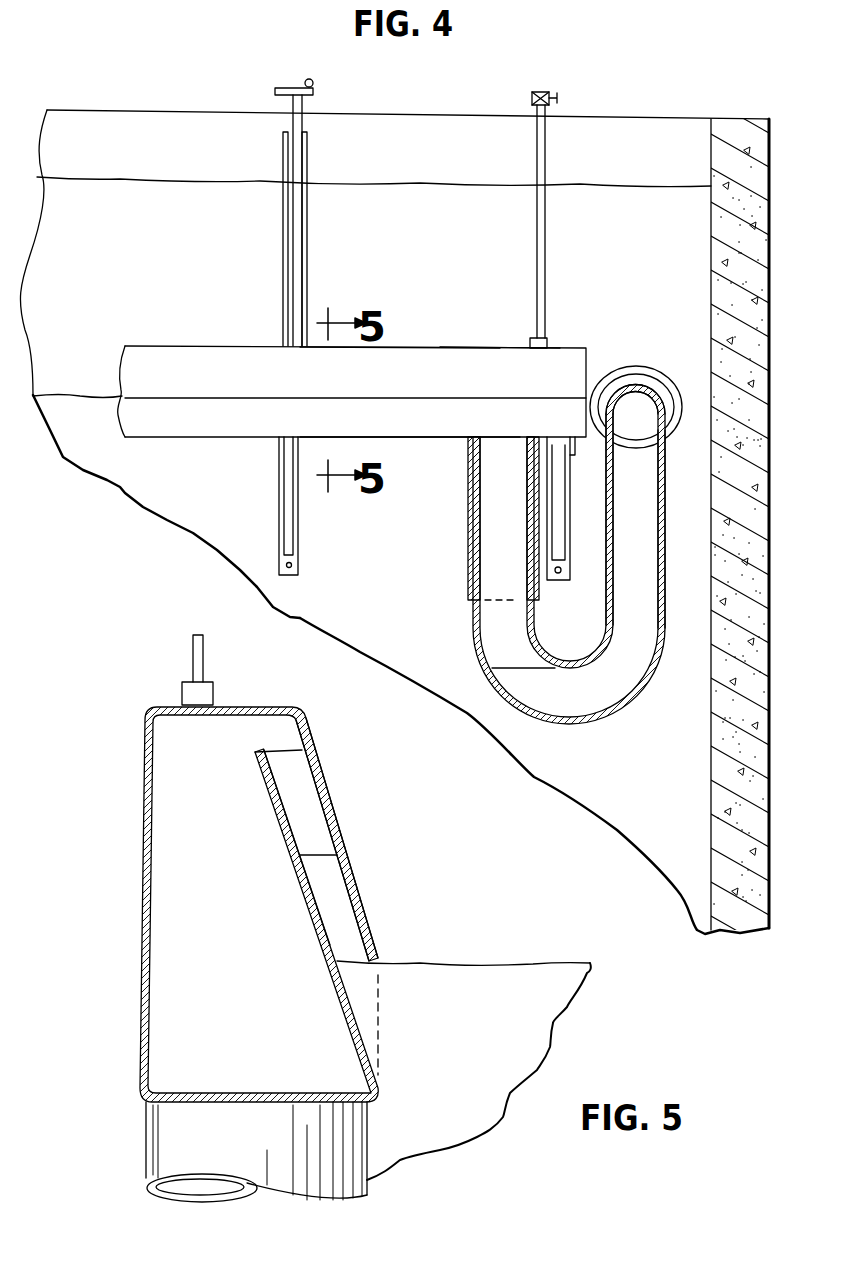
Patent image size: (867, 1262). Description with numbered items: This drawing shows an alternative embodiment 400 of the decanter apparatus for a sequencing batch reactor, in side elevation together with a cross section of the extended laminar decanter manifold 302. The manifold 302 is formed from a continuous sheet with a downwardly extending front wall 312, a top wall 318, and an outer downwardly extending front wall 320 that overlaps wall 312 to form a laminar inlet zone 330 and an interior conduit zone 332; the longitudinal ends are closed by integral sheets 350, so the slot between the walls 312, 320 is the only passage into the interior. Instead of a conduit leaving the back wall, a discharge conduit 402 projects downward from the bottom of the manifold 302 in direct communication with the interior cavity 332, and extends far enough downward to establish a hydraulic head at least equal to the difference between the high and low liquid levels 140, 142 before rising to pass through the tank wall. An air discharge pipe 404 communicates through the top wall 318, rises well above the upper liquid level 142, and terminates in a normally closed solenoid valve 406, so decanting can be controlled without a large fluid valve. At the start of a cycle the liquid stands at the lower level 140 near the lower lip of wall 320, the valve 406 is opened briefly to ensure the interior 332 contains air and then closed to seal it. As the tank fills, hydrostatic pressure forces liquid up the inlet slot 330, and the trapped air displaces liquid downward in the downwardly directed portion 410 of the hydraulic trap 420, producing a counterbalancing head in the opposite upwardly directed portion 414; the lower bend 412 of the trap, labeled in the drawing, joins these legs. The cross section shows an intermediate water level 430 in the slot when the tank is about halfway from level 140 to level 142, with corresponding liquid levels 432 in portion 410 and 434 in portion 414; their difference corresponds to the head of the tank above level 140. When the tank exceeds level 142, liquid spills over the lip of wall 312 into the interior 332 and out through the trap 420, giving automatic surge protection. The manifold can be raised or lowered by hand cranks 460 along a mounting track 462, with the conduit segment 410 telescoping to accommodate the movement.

In FIG. 4, the lower liquid level 140 is at (70, 396).
In FIG. 5, the lower liquid level 140 is at (533, 963).
In FIG. 4, the upper liquid level 142 is at (448, 191).
In FIG. 4, the extended laminar decanter manifold 302 is at (195, 352).
In FIG. 4, the downwardly extending front wall 312 is at (420, 437).
In FIG. 5, the downwardly extending front wall 312 is at (273, 793).
In FIG. 4, the top wall 318 is at (478, 349).
In FIG. 4, the downwardly extending front wall 320 is at (388, 368).
In FIG. 5, the downwardly extending front wall 320 is at (332, 797).
In FIG. 5, the laminar inlet zone 330 is at (337, 888).
In FIG. 5, the interior conduit zone 332 is at (308, 1017).
In FIG. 4, the end sheets 350 is at (584, 362).
In FIG. 4, the alternative decanter embodiment 400 is at (704, 97).
In FIG. 4, the discharge conduit 402 is at (493, 512).
In FIG. 5, the discharge conduit 402 is at (353, 1133).
In FIG. 4, the air discharge pipe 404 is at (544, 253).
In FIG. 5, the air discharge pipe 404 is at (193, 650).
In FIG. 4, the solenoid valve 406 is at (540, 92).
In FIG. 4, the downwardly directed conduit portion 410 is at (492, 577).
In FIG. 4, the lower U-bend of tube 412 is at (572, 705).
In FIG. 4, the upwardly directed conduit portion 414 is at (651, 537).
In FIG. 4, the hydraulic trap 420 is at (634, 620).
In FIG. 5, the intermediate water level 430 is at (317, 855).
In FIG. 4, the liquid level in conduit portion 410 432 is at (508, 545).
In FIG. 4, the liquid level in conduit portion 414 434 is at (639, 447).
In FIG. 4, the hand cranks 460 is at (287, 208).
In FIG. 4, the mounting track 462 is at (305, 213).